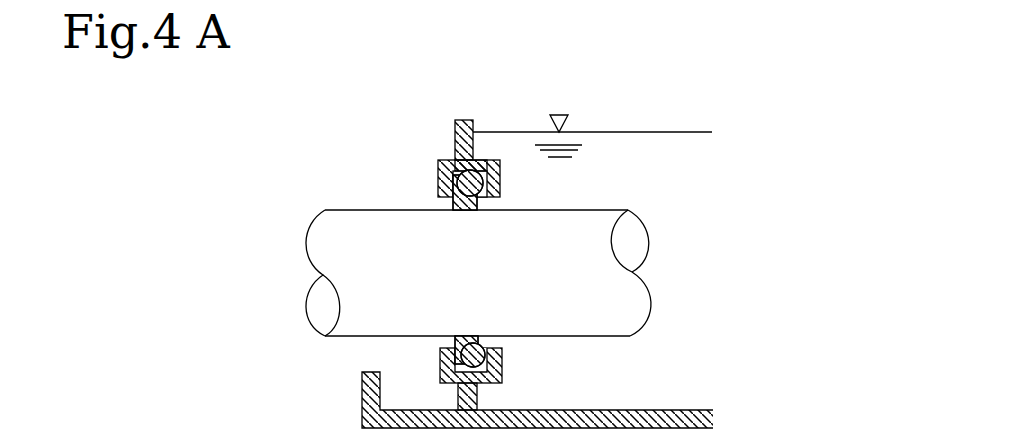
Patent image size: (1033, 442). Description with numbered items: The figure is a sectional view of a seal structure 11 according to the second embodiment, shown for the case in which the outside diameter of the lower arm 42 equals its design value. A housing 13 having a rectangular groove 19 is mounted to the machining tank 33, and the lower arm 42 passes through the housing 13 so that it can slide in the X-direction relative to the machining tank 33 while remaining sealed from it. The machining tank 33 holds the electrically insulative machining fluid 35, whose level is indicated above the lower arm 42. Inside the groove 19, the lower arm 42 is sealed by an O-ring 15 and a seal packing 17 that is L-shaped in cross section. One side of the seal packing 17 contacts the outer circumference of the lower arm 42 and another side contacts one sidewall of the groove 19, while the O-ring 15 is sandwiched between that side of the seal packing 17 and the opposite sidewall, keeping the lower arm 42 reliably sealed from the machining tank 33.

The seal structure 11 is at (460, 162).
The housing 13 is at (445, 161).
The O-ring 15 is at (480, 160).
The seal packing 17 is at (468, 212).
The rectangular groove 19 is at (458, 180).
The machining tank 33 is at (462, 120).
The machining fluid 35 is at (622, 148).
The lower arm 42 is at (597, 219).